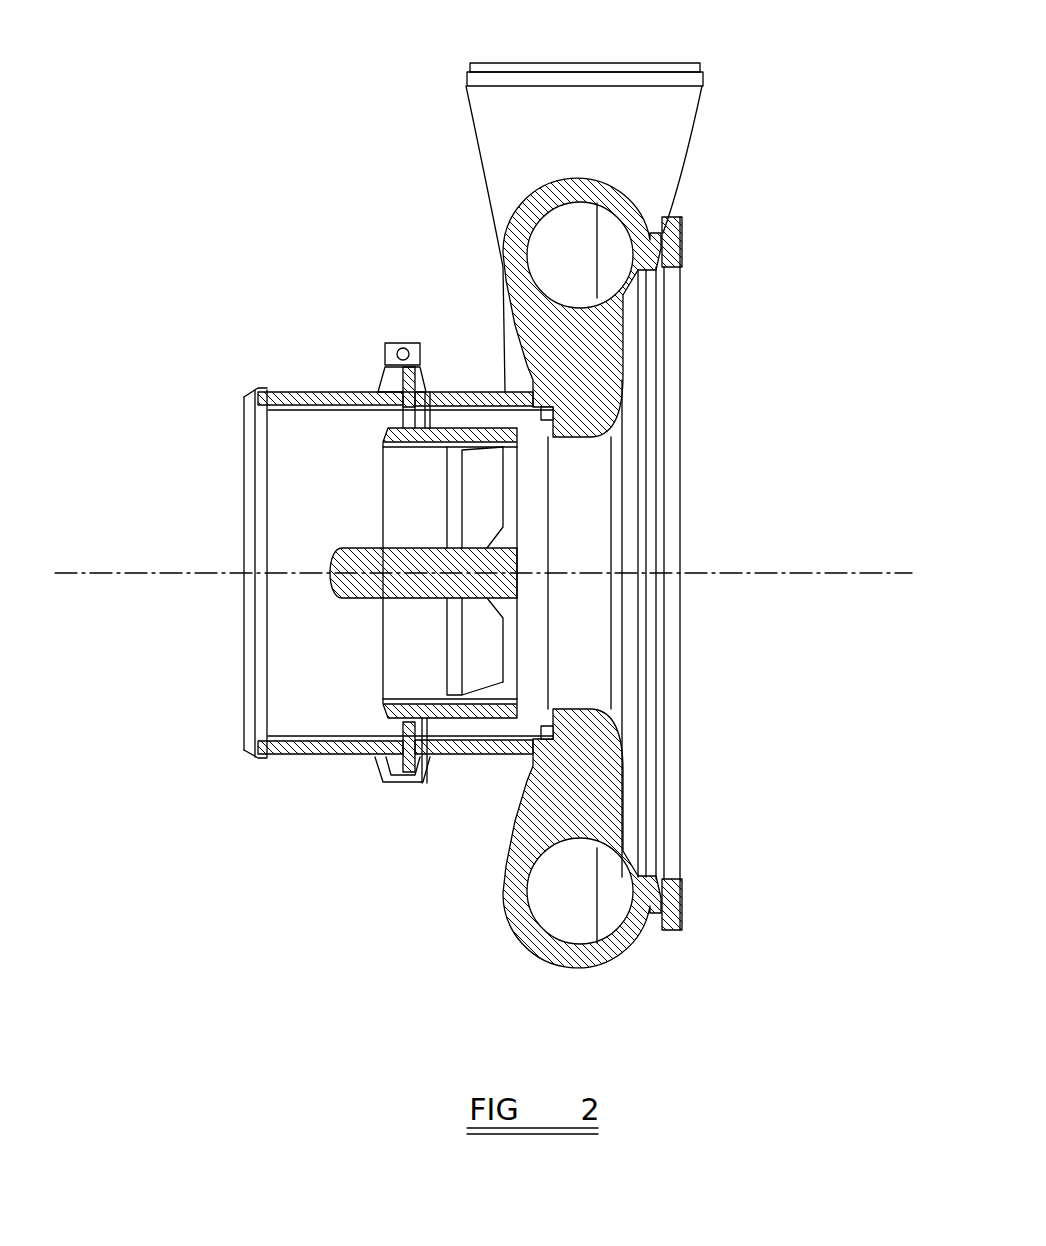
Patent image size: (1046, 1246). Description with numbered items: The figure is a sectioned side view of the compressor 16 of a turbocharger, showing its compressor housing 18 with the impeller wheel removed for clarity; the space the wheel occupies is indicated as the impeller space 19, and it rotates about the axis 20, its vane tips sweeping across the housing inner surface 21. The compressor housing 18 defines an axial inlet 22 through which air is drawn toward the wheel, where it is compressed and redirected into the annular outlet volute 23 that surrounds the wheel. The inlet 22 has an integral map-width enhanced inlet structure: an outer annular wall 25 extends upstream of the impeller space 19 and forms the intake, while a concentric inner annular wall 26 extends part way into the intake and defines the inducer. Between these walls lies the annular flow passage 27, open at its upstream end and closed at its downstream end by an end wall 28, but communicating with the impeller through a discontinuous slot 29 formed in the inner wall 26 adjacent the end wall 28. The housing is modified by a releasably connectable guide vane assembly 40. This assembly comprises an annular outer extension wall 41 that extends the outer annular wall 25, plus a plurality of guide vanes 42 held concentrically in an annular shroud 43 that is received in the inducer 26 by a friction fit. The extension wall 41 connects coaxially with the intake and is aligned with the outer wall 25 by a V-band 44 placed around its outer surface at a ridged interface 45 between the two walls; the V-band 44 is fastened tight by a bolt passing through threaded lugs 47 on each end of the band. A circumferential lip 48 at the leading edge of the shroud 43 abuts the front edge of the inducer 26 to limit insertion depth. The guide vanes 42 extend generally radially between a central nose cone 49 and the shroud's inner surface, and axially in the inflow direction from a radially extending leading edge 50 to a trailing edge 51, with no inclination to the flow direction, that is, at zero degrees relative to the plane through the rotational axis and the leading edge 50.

The compressor 16 is at (317, 195).
The compressor housing 18 is at (477, 590).
The impeller space 19 is at (611, 527).
The axis 20 is at (828, 577).
The housing inner surface 21 is at (598, 433).
The axial inlet 22 is at (365, 495).
The annular outlet volute 23 is at (557, 920).
The outer annular wall 25 is at (478, 392).
The inner annular wall 26 is at (437, 412).
The annular flow passage 27 is at (470, 740).
The end wall 28 is at (517, 340).
The discontinuous slot 29 is at (523, 723).
The guide vane assembly 40 is at (215, 503).
The annular outer extension wall 41 is at (316, 392).
The guide vanes 42 is at (465, 657).
The annular shroud 43 is at (383, 447).
The V-band 44 is at (405, 785).
The ridged interface 45 is at (375, 776).
The threaded lugs 47 is at (386, 347).
The circumferential lip 48 is at (385, 710).
The central nose cone 49 is at (353, 595).
The leading edge 50 is at (465, 505).
The trailing edge 51 is at (503, 672).